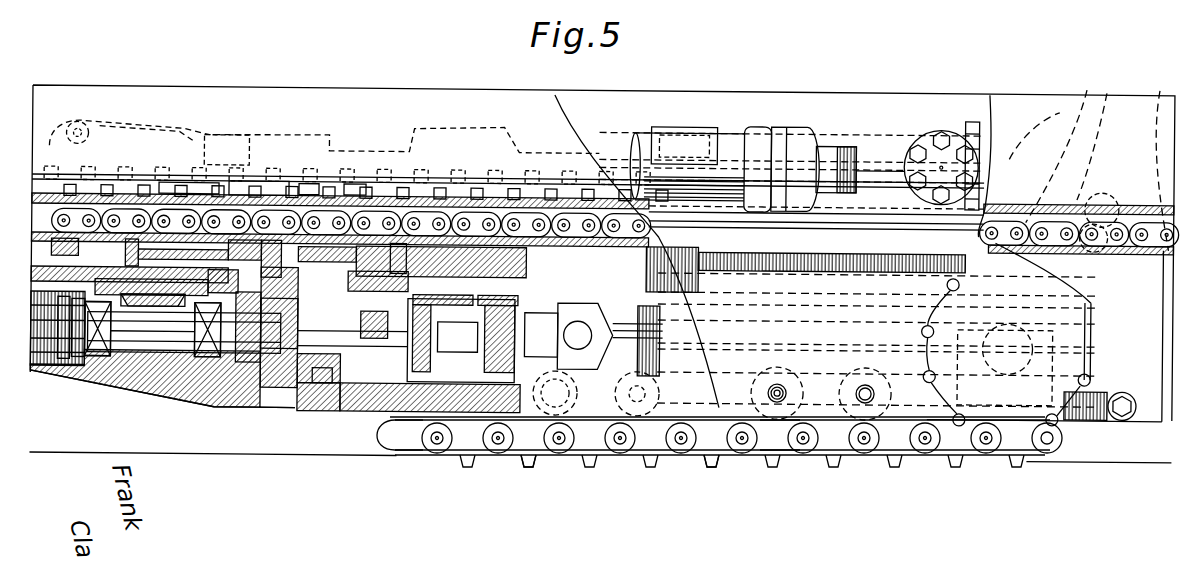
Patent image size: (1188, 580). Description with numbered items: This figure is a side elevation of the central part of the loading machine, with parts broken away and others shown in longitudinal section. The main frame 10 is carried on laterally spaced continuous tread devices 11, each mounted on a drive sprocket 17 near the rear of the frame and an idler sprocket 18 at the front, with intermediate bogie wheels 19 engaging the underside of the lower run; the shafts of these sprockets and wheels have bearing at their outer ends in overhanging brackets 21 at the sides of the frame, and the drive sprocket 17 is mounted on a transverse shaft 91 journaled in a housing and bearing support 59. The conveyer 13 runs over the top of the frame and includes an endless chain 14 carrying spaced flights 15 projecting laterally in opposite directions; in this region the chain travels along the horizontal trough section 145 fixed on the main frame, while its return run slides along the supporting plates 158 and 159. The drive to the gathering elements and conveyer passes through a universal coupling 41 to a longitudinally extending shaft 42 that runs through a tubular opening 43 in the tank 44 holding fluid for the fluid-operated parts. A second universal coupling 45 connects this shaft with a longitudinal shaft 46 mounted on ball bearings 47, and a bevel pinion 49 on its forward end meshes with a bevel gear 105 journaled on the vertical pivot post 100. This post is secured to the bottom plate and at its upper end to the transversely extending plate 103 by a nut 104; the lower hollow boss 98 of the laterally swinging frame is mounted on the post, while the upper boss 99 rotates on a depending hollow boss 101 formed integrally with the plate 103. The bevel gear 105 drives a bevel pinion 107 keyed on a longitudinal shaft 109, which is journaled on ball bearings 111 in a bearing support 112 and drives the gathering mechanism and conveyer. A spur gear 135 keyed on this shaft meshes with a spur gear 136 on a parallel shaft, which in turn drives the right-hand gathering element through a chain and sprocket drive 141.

The main frame 10 is at (190, 395).
The continuous tread device 11 is at (460, 470).
The conveyer 13 is at (308, 215).
The endless chain 14 is at (228, 212).
The flight 15 is at (157, 215).
The drive sprocket 17 is at (942, 370).
The idler sprocket 18 is at (538, 462).
The bogie wheel 19 is at (790, 399).
The overhanging bracket 21 is at (778, 470).
The universal coupling 41 is at (1112, 368).
The longitudinally extending shaft 42 is at (665, 325).
The tubular opening 43 is at (640, 385).
The tank 44 is at (705, 460).
The universal coupling 45 is at (580, 305).
The longitudinally extending shaft 46 is at (545, 315).
The ball bearing 47 is at (478, 333).
The bevel pinion 49 is at (345, 455).
The housing and bearing support 59 is at (980, 120).
The transverse shaft 91 is at (990, 382).
The hollow upright boss 98 is at (325, 405).
The hollow upright boss 99 is at (398, 270).
The vertical shaft or pivot post 100 is at (340, 410).
The depending hollow boss 101 is at (275, 208).
The transversely extending plate 103 is at (475, 277).
The nut 104 is at (355, 210).
The bevel gear 105 is at (250, 395).
The bevel pinion 107 is at (278, 370).
The longitudinal shaft 109 is at (160, 340).
The ball bearing 111 is at (110, 357).
The bearing support 112 is at (140, 345).
The spur gear 135 is at (82, 390).
The spur gear 136 is at (68, 372).
The chain and sprocket drive 141 is at (45, 385).
The horizontal trough section 145 is at (802, 99).
The supporting plate 158 is at (1115, 250).
The supporting plate 159 is at (182, 192).